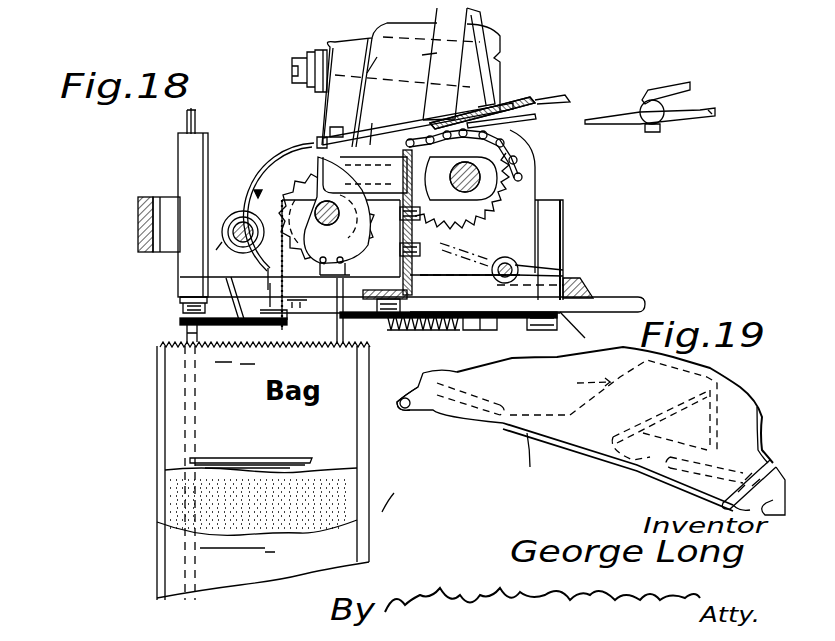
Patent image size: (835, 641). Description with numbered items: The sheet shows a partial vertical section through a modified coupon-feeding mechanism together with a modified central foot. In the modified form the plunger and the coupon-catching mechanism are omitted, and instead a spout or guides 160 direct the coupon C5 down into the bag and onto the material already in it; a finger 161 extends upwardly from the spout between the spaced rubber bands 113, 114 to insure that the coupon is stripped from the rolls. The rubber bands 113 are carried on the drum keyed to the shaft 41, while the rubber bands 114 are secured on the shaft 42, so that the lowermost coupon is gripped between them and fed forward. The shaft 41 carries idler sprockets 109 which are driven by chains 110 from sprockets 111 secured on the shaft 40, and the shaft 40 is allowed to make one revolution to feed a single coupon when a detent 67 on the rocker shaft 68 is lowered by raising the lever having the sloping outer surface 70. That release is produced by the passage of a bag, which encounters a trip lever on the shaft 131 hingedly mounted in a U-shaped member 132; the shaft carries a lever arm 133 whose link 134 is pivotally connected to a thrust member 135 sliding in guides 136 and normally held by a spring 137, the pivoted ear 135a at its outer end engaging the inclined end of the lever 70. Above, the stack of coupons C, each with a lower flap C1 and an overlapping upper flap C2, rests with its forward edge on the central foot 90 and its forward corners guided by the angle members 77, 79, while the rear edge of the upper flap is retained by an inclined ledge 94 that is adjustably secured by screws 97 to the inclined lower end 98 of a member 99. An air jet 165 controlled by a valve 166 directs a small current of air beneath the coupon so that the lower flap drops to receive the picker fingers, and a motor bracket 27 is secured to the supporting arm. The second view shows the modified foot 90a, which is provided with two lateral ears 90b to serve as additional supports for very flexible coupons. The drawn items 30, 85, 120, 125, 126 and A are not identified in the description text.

In FIG. 18, the motor bracket 27 is at (620, 297).
In FIG. 18, the hub housing 30 is at (530, 163).
In FIG. 18, the shaft 40 is at (497, 177).
In FIG. 18, the shaft 41 is at (258, 190).
In FIG. 18, the shaft 42 is at (230, 228).
In FIG. 18, the detent 67 is at (473, 257).
In FIG. 18, the rocker shaft 68 is at (517, 263).
In FIG. 18, the sloping outer surface of lever arm 70 is at (580, 287).
In FIG. 18, the angle member 77 is at (382, 56).
In FIG. 18, the angle member 79 is at (419, 57).
In FIG. 18, the knob 85 is at (307, 55).
In FIG. 18, the central foot 90 is at (365, 175).
In FIG. 19, the foot 90a is at (575, 382).
In FIG. 19, the lateral ears 90b is at (603, 453).
In FIG. 18, the inclined ledge 94 is at (492, 115).
In FIG. 18, the screw 97 is at (530, 113).
In FIG. 18, the inclined lower end 98 is at (528, 100).
In FIG. 18, the member 99 is at (459, 64).
In FIG. 18, the idler sprocket 109 is at (376, 125).
In FIG. 18, the chain 110 is at (489, 219).
In FIG. 18, the sprocket 111 is at (537, 182).
In FIG. 18, the rubber band 113 is at (275, 175).
In FIG. 18, the rubber band 114 is at (222, 242).
In FIG. 18, the chain / plate tab 120 is at (325, 284).
In FIG. 19, the chain / plate tab 120 is at (512, 358).
In FIG. 18, the gear 125 is at (325, 200).
In FIG. 18, the screw 126 is at (380, 252).
In FIG. 18, the shaft 131 is at (186, 126).
In FIG. 18, the U-shaped member 132 is at (180, 167).
In FIG. 18, the lever arm 133 is at (182, 319).
In FIG. 18, the link 134 is at (225, 325).
In FIG. 18, the thrust member 135 is at (300, 323).
In FIG. 18, the pivoted ear 135a is at (585, 325).
In FIG. 18, the guides 136 is at (342, 348).
In FIG. 18, the spring 137 is at (420, 336).
In FIG. 18, the spout or guides 160 is at (212, 277).
In FIG. 18, the finger 161 is at (272, 205).
In FIG. 18, the air jet 165 is at (640, 125).
In FIG. 18, the valve 166 is at (670, 82).
In FIG. 18, the article A is at (393, 493).
In FIG. 18, the coupon C is at (402, 130).
In FIG. 19, the coupon C is at (680, 382).
In FIG. 18, the lower flap C1 is at (525, 132).
In FIG. 18, the upper flap C2 is at (480, 35).
In FIG. 19, the upper flap C2 is at (756, 380).
In FIG. 18, the coupon C5 is at (238, 458).